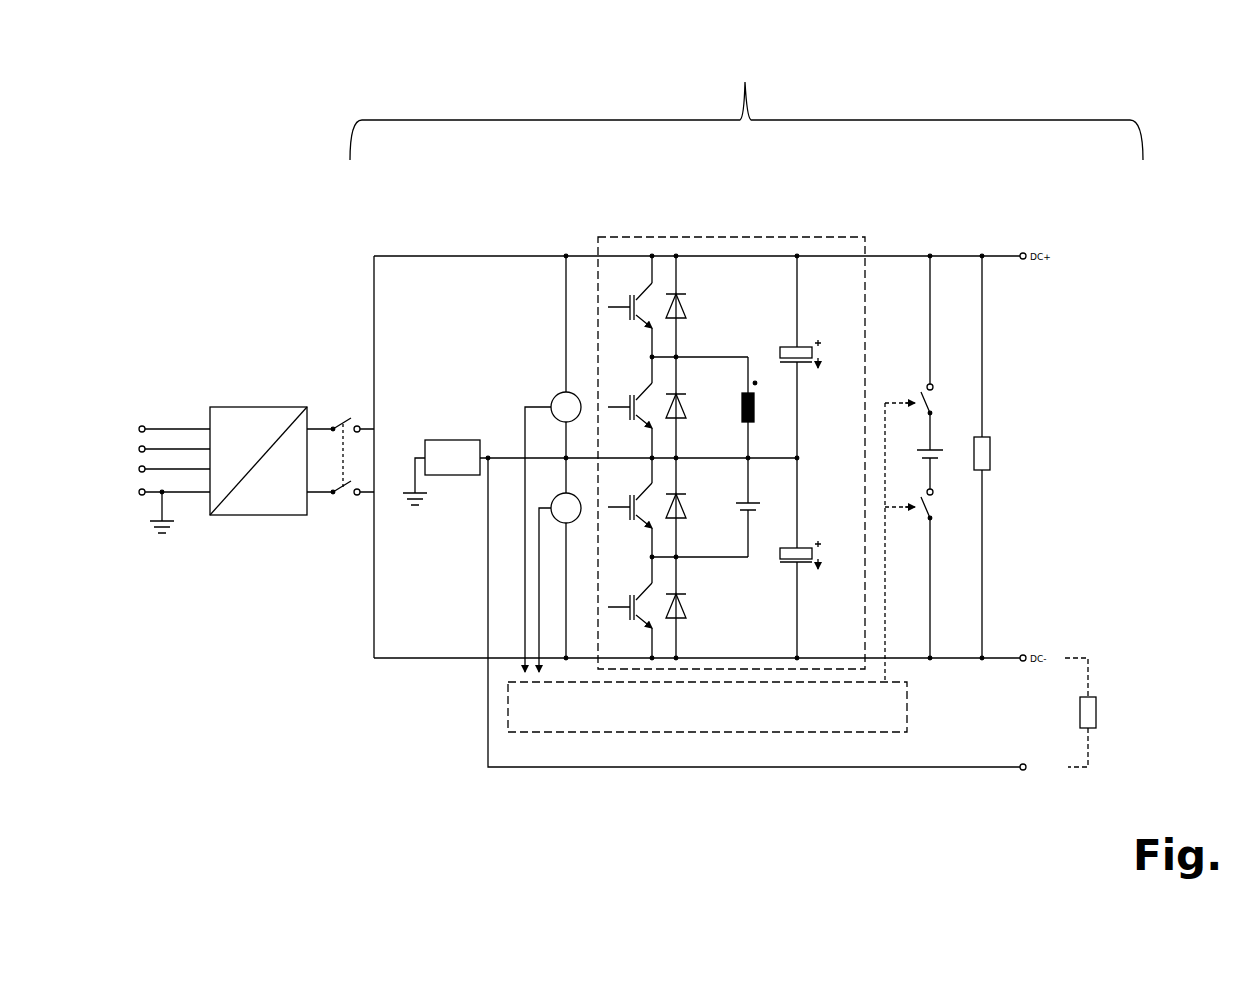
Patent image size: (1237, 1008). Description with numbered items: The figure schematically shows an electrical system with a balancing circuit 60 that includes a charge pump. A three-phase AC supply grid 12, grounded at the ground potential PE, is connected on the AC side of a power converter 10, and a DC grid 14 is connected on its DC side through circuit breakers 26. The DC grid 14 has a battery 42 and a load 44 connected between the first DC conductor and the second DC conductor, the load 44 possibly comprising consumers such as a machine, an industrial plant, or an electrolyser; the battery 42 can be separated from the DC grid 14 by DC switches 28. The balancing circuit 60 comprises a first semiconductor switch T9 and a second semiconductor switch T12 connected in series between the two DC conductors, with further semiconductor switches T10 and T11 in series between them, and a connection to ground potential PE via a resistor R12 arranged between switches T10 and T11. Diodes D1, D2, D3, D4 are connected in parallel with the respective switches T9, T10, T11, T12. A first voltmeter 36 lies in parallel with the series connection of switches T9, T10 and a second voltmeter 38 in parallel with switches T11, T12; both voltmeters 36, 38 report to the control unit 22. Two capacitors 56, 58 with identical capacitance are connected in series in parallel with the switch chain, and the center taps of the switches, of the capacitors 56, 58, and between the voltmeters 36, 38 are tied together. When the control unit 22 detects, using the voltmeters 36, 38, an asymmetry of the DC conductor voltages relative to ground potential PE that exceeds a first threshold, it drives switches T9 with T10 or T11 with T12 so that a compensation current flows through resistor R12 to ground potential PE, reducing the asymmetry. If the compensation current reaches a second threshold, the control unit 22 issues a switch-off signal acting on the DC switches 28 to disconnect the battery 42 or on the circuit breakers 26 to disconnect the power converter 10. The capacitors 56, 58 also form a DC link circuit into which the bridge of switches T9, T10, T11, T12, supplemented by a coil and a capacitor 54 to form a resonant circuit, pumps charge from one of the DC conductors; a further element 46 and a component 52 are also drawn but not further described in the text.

The power converter 10 is at (262, 407).
The three-phase AC supply grid 12 is at (166, 395).
The DC grid 14 is at (746, 102).
The control unit 22 is at (707, 707).
The circuit breakers 26 is at (345, 420).
The DC switches 28 is at (930, 520).
The first voltmeter 36 is at (552, 398).
The second voltmeter 38 is at (555, 498).
The battery 42 is at (935, 450).
The load 44 is at (990, 445).
The load resistor 46 is at (1095, 712).
The resistor 52 is at (752, 416).
The capacitor 54 is at (754, 504).
The capacitor 56 is at (814, 345).
The capacitor 58 is at (813, 545).
The balancing circuit 60 is at (714, 236).
The first semiconductor switch T9 is at (630, 316).
The further semiconductor switch T10 is at (628, 415).
The further semiconductor switch T11 is at (632, 496).
The second semiconductor switch T12 is at (632, 596).
The diode D1 is at (686, 313).
The diode D2 is at (686, 413).
The diode D3 is at (686, 512).
The diode D4 is at (686, 608).
The resistor R12 is at (418, 516).
The ground potential PE is at (160, 540).